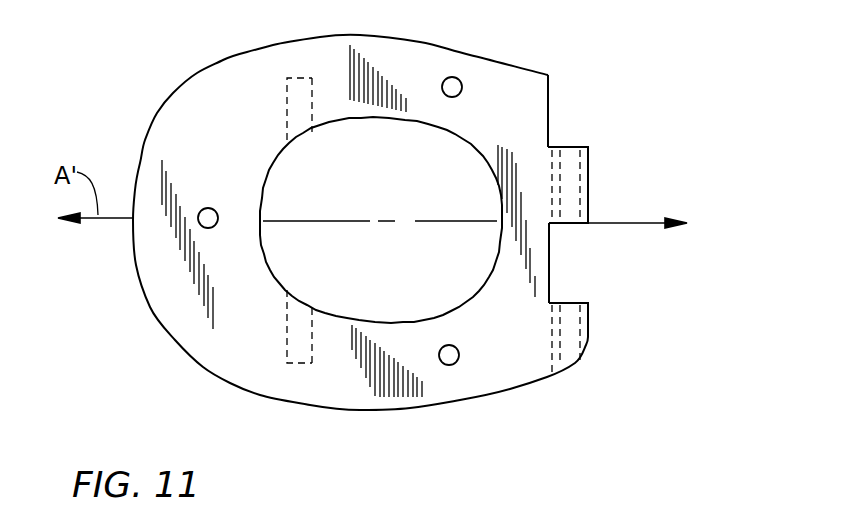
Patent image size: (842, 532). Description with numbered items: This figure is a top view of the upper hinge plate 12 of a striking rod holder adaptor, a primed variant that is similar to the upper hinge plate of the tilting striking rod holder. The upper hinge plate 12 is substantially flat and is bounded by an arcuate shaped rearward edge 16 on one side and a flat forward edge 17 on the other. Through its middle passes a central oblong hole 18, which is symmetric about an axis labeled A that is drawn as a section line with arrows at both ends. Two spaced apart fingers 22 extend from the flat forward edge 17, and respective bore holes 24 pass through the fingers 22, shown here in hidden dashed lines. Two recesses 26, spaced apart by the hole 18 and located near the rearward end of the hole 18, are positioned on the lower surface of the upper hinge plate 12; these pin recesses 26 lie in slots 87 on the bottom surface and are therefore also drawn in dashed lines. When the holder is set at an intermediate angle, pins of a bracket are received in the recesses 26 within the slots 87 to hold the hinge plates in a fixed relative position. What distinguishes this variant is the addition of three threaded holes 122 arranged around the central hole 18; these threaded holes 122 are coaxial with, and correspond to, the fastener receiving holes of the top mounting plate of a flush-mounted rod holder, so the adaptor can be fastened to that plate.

The upper hinge plate 12 is at (425, 40).
The arcuate shaped rearward edge 16 is at (150, 303).
The flat forward edge 17 is at (552, 118).
The central oblong hole 18 is at (498, 263).
The fingers 22 is at (588, 198).
The bore holes 24 is at (578, 162).
The recesses 26 is at (287, 102).
The slots 87 is at (305, 100).
The threaded holes 122 is at (218, 216).